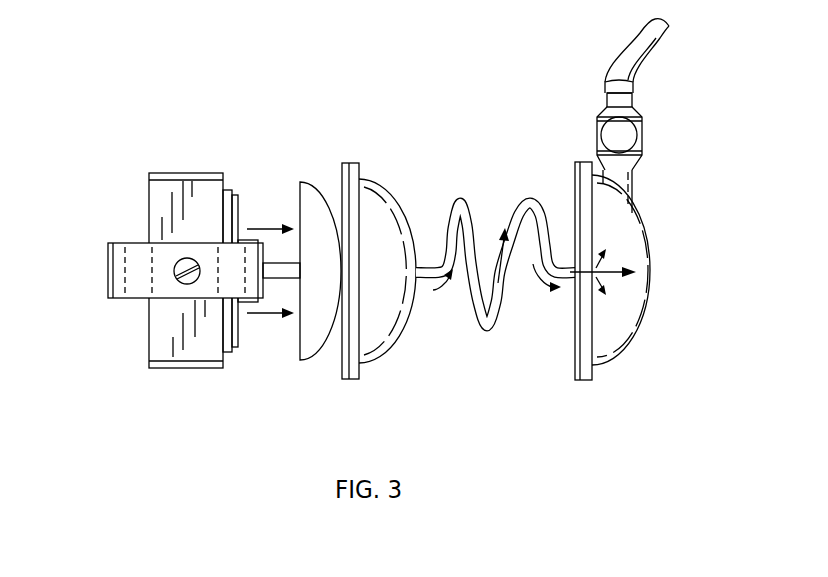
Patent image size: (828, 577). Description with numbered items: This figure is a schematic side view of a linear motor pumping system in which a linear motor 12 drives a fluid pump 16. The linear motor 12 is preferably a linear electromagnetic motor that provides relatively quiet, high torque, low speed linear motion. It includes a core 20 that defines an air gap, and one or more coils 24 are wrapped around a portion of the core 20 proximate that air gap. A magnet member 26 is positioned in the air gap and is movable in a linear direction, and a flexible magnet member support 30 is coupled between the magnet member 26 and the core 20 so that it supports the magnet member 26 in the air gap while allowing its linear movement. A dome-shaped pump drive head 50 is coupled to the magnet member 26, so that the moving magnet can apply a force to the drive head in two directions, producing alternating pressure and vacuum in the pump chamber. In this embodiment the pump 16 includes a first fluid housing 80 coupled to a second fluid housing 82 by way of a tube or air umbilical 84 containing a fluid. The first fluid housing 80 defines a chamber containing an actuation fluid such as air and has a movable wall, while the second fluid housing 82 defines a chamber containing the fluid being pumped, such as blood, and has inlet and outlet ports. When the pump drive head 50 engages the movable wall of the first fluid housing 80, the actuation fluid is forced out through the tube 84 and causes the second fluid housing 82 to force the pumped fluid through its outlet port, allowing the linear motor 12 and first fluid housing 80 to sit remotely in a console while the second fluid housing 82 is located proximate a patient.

The linear motor 12 is at (243, 124).
The pump 16 is at (441, 127).
The core 20 is at (172, 173).
The coils 24 is at (235, 195).
The magnet member 26 is at (240, 240).
The magnet member support 30 is at (108, 284).
The pump drive head 50 is at (298, 343).
The first fluid housing 80 is at (402, 323).
The second fluid housing 82 is at (623, 333).
The tube or air umbilical 84 is at (490, 334).